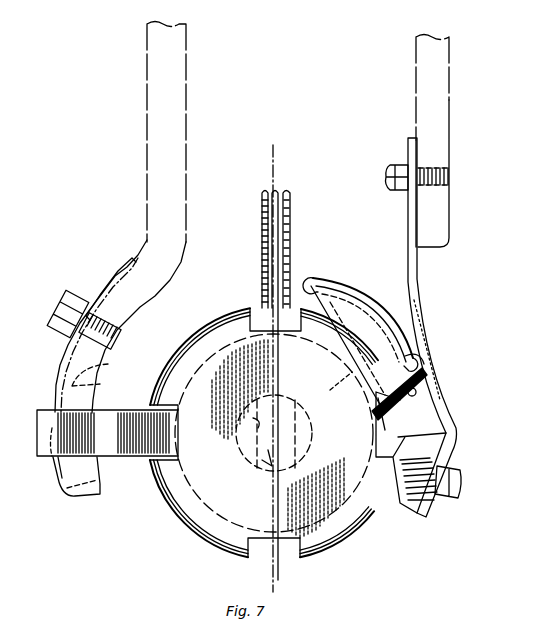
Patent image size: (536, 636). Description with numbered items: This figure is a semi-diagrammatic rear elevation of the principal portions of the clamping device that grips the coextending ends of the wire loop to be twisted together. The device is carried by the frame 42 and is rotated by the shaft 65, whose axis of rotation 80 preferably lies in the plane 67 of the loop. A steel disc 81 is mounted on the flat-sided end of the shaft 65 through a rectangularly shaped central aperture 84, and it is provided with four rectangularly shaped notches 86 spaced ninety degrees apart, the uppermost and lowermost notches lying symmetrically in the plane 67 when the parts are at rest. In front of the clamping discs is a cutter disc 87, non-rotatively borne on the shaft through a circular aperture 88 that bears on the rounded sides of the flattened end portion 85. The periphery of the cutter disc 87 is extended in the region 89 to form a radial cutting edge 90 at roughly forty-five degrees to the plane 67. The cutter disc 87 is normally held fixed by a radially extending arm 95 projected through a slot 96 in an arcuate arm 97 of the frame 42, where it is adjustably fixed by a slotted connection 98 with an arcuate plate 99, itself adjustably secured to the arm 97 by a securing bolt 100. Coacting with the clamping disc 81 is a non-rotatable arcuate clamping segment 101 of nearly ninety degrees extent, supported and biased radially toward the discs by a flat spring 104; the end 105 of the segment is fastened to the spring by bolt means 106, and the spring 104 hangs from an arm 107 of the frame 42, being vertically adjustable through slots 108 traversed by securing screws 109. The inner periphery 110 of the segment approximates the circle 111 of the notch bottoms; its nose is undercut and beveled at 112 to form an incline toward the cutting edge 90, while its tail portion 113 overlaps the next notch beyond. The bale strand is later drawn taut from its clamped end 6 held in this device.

The clamped end 6 is at (417, 392).
The frame 42 is at (147, 118).
The shaft 65 is at (287, 401).
The plane of the loop 67 is at (274, 160).
The axis of rotation 80 is at (273, 440).
The steel disc 81 is at (348, 528).
The rectangularly shaped central aperture 84 is at (243, 448).
The flattened end portion 85 is at (304, 438).
The rectangularly shaped notches 86 is at (254, 312).
The cutter disc 87 is at (360, 516).
The circular aperture 88 is at (305, 461).
The extension 89 is at (422, 366).
The radial cutting edge 90 is at (380, 330).
The radially extending arm 95 is at (124, 456).
The slot 96 is at (108, 366).
The arm 97 is at (121, 275).
The slotted connection 98 is at (53, 412).
The plate 99 is at (113, 273).
The securing bolt 100 is at (50, 312).
The arcuate clamping segment 101 is at (342, 297).
The biasing flat spring 104 is at (425, 322).
The end of segment 105 is at (417, 434).
The bolt means 106 is at (452, 483).
The arm 107 is at (441, 138).
The slots 108 is at (418, 196).
The securing screws 109 is at (395, 166).
The inner periphery 110 is at (378, 331).
The circle of the bottoms of the notches 111 is at (208, 350).
The undercut nose portion 112 is at (305, 296).
The tail portion 113 is at (411, 452).